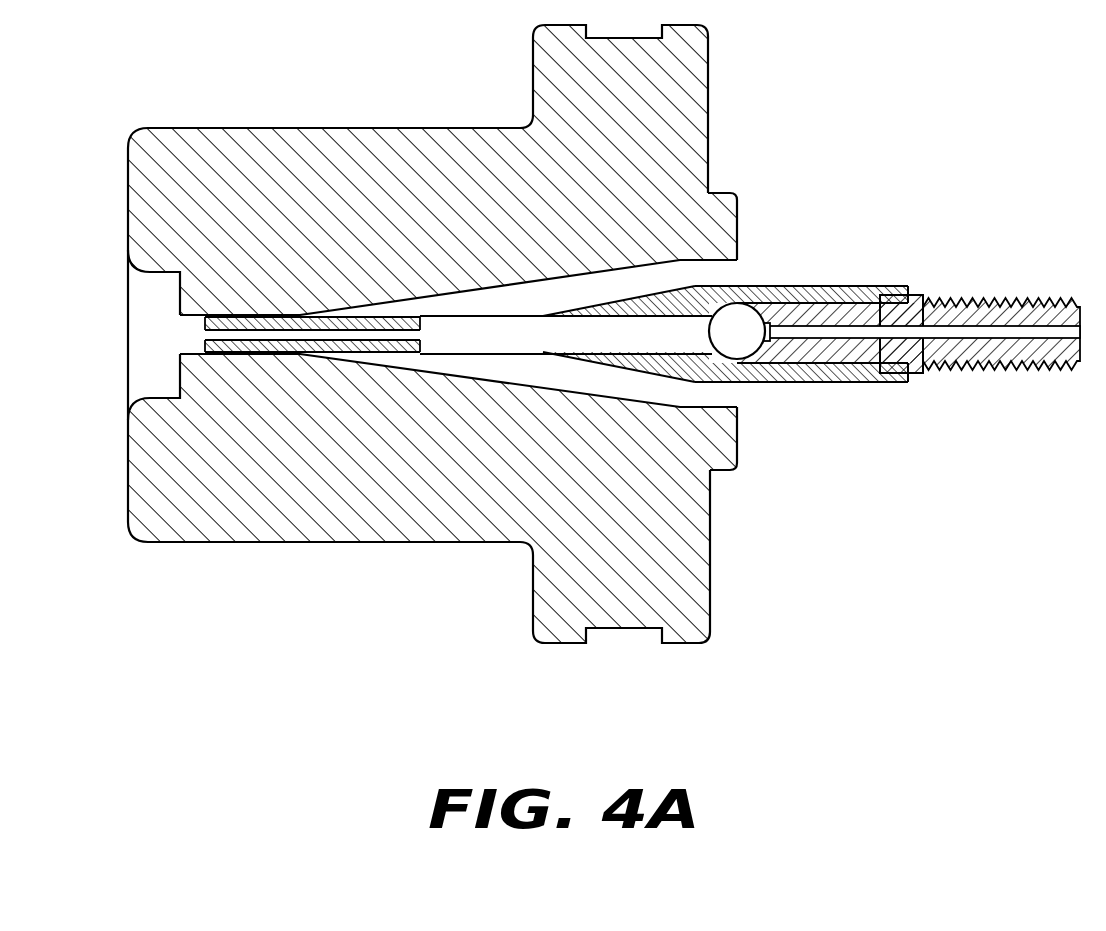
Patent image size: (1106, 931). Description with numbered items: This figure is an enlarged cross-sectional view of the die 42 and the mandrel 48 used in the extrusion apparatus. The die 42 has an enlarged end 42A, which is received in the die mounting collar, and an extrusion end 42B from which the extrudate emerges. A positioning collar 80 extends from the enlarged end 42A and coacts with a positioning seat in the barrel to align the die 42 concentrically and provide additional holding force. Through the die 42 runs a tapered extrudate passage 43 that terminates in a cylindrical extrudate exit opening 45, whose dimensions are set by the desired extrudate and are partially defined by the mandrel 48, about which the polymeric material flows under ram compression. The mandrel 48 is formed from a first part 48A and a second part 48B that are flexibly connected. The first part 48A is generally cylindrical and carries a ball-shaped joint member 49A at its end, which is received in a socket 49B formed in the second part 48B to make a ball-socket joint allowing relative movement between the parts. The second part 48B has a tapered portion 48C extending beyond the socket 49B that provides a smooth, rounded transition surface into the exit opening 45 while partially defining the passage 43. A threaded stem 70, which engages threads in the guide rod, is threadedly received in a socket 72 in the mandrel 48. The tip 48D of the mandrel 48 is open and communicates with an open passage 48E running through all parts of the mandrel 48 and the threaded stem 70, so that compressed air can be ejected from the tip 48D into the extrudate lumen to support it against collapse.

The die 42 is at (435, 122).
The enlarged end 42A is at (716, 62).
The extrusion end 42B is at (216, 122).
The tapered extrudate passage 43 is at (578, 296).
The cylindrical extrudate exit opening 45 is at (182, 347).
The mandrel 48 is at (770, 389).
The first part of the mandrel 48A is at (489, 360).
The second part of the mandrel 48B is at (897, 389).
The tapered portion 48C is at (623, 373).
The tip of the mandrel 48D is at (182, 324).
The open passage 48E is at (406, 362).
The ball-shaped joint member 49A is at (745, 320).
The socket 49B is at (768, 302).
The threaded stem 70 is at (954, 296).
The socket 72 is at (845, 385).
The positioning collar 80 is at (742, 196).